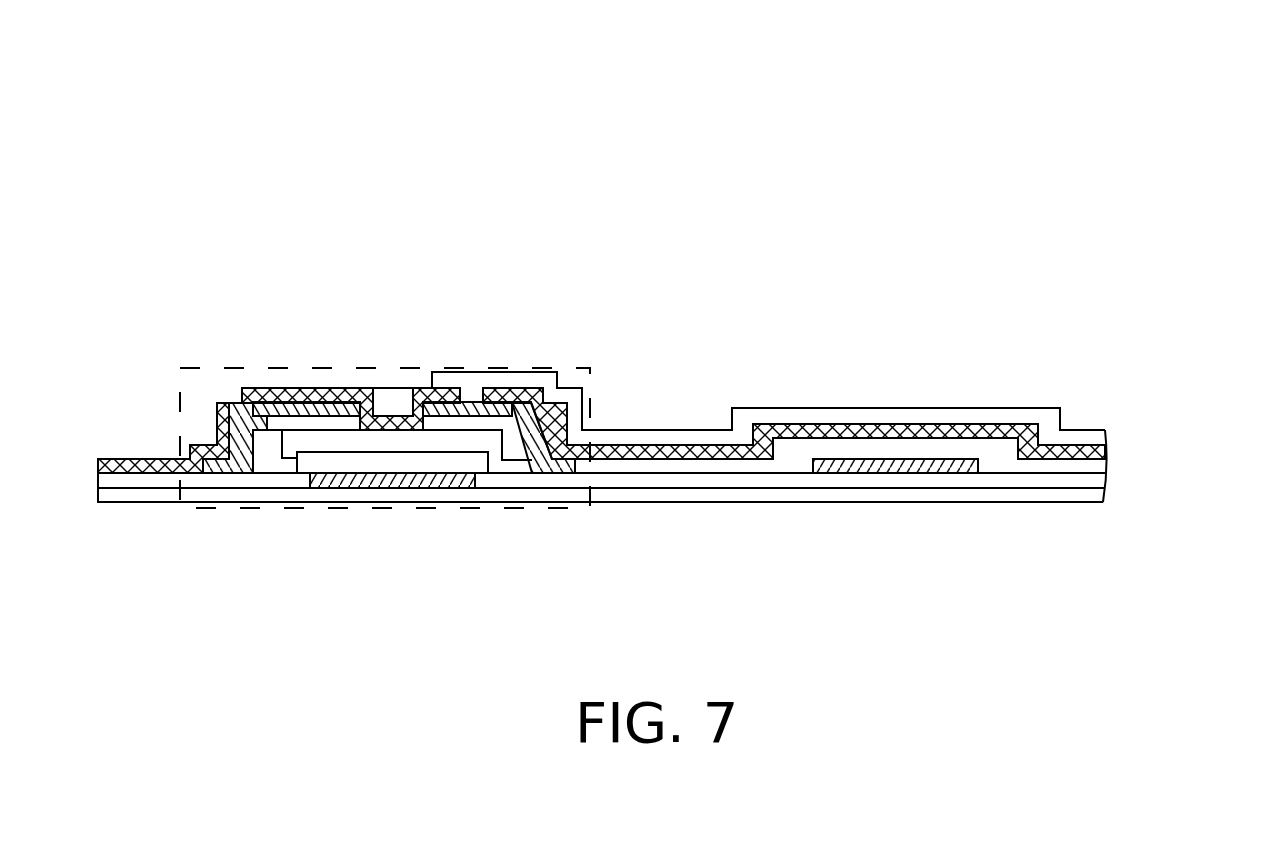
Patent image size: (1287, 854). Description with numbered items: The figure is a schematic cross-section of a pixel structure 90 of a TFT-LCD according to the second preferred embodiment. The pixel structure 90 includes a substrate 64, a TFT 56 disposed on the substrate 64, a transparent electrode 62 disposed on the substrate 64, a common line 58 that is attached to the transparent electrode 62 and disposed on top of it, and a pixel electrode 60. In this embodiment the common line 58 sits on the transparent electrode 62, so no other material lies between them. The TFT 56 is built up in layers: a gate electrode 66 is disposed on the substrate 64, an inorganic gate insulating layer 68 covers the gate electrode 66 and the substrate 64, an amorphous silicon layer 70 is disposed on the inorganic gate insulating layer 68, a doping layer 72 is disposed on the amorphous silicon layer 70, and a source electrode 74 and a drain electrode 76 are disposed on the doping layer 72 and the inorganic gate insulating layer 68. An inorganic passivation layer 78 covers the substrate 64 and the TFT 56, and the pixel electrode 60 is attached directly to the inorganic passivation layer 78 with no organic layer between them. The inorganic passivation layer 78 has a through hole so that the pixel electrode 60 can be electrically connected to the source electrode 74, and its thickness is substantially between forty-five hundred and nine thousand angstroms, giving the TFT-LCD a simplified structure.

The pixel structure 90 is at (1117, 150).
The TFT 56 is at (240, 368).
The common line 58 is at (895, 466).
The pixel electrode 60 is at (1030, 413).
The transparent electrode 62 is at (1100, 482).
The substrate 64 is at (648, 482).
The gate electrode 66 is at (375, 486).
The inorganic gate insulating layer 68 is at (490, 478).
The amorphous silicon layer 70 is at (515, 463).
The doping layer 72 is at (337, 422).
The source electrode 74 is at (513, 396).
The drain electrode 76 is at (263, 412).
The inorganic passivation layer 78 is at (333, 396).